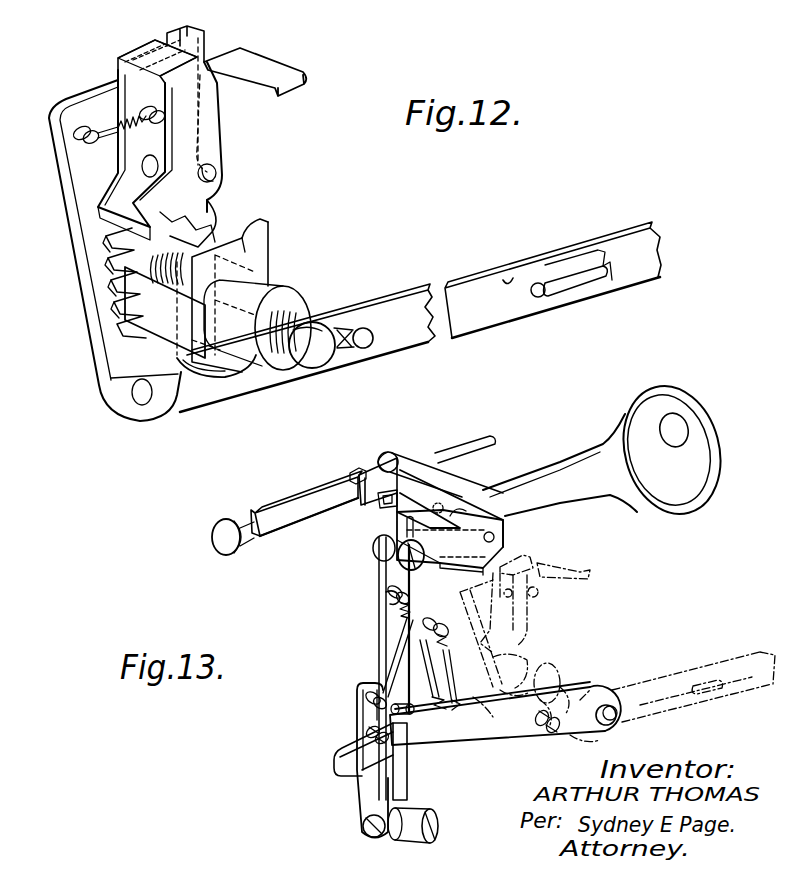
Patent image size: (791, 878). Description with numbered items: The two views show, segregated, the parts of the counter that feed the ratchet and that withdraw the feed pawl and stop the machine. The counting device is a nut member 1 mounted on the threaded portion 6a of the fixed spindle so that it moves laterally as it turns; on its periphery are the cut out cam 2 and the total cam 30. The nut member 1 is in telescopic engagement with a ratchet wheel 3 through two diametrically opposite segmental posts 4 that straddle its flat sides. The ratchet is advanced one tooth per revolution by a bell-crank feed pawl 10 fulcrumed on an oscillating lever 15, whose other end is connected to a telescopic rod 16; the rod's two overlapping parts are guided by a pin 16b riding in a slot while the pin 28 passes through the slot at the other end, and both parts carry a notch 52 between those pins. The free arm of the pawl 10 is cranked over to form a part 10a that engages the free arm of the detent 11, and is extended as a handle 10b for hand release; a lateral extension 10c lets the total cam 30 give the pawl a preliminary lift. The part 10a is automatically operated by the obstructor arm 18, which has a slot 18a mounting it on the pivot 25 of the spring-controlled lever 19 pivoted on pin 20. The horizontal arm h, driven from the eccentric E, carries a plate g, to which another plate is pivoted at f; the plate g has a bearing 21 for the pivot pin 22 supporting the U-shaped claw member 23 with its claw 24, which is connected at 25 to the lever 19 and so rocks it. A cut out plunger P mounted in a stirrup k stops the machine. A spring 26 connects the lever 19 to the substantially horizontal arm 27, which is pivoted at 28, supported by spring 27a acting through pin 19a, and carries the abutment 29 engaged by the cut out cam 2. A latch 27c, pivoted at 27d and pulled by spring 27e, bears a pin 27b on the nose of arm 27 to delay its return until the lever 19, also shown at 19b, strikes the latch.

In FIG. 12, the stirrup k is at (150, 54).
In FIG. 13, the stirrup k is at (288, 538).
In FIG. 12, the cranked part of feed pawl 10a is at (204, 83).
In FIG. 12, the handle 10b is at (273, 63).
In FIG. 12, the oscillating lever 15 is at (62, 106).
In FIG. 12, the detent 11 is at (210, 147).
In FIG. 13, the detent 11 is at (383, 505).
In FIG. 12, the feed pawl 10 is at (97, 213).
In FIG. 12, the lateral extension of feed pawl 10c is at (120, 230).
In FIG. 12, the ratchet wheel 3 is at (187, 237).
In FIG. 12, the total cam 30 is at (262, 236).
In FIG. 12, the nut member 1 is at (253, 250).
In FIG. 12, the posts 4 is at (287, 275).
In FIG. 12, the cut out cam 2 is at (213, 372).
In FIG. 12, the telescopic rod 16 is at (252, 380).
In FIG. 12, the threaded portion of spindle 6a is at (320, 355).
In FIG. 12, the pin 28 is at (363, 332).
In FIG. 13, the pin 28 is at (605, 726).
In FIG. 12, the notch 52 is at (508, 278).
In FIG. 12, the pin 16b is at (540, 286).
In FIG. 13, the pivot f is at (398, 457).
In FIG. 13, the second plate g is at (450, 480).
In FIG. 13, the bearing 21 is at (462, 514).
In FIG. 13, the horizontal arm h is at (547, 468).
In FIG. 13, the U shaped claw member 23 is at (500, 510).
In FIG. 13, the eccentric E is at (677, 403).
In FIG. 13, the pivot pin 22 is at (507, 533).
In FIG. 13, the cut out plunger P is at (213, 532).
In FIG. 13, the claw 24 is at (368, 502).
In FIG. 13, the slot 18a is at (395, 567).
In FIG. 13, the obstructor arm 18 is at (437, 565).
In FIG. 13, the pivot 25 is at (386, 596).
In FIG. 13, the spring 26 is at (403, 612).
In FIG. 13, the spring-controlled lever 19 is at (377, 635).
In FIG. 13, the spring 27e is at (440, 663).
In FIG. 13, the spring 27a is at (427, 647).
In FIG. 13, the pin 19a is at (393, 712).
In FIG. 13, the pin 27b is at (368, 733).
In FIG. 13, the latch 27c is at (357, 795).
In FIG. 13, the pivot 27d is at (364, 824).
In FIG. 13, the pin 20 is at (403, 823).
In FIG. 13, the rod lower portion 19b is at (408, 790).
In FIG. 13, the horizontal arm 27 is at (480, 733).
In FIG. 13, the abutment 29 is at (538, 733).